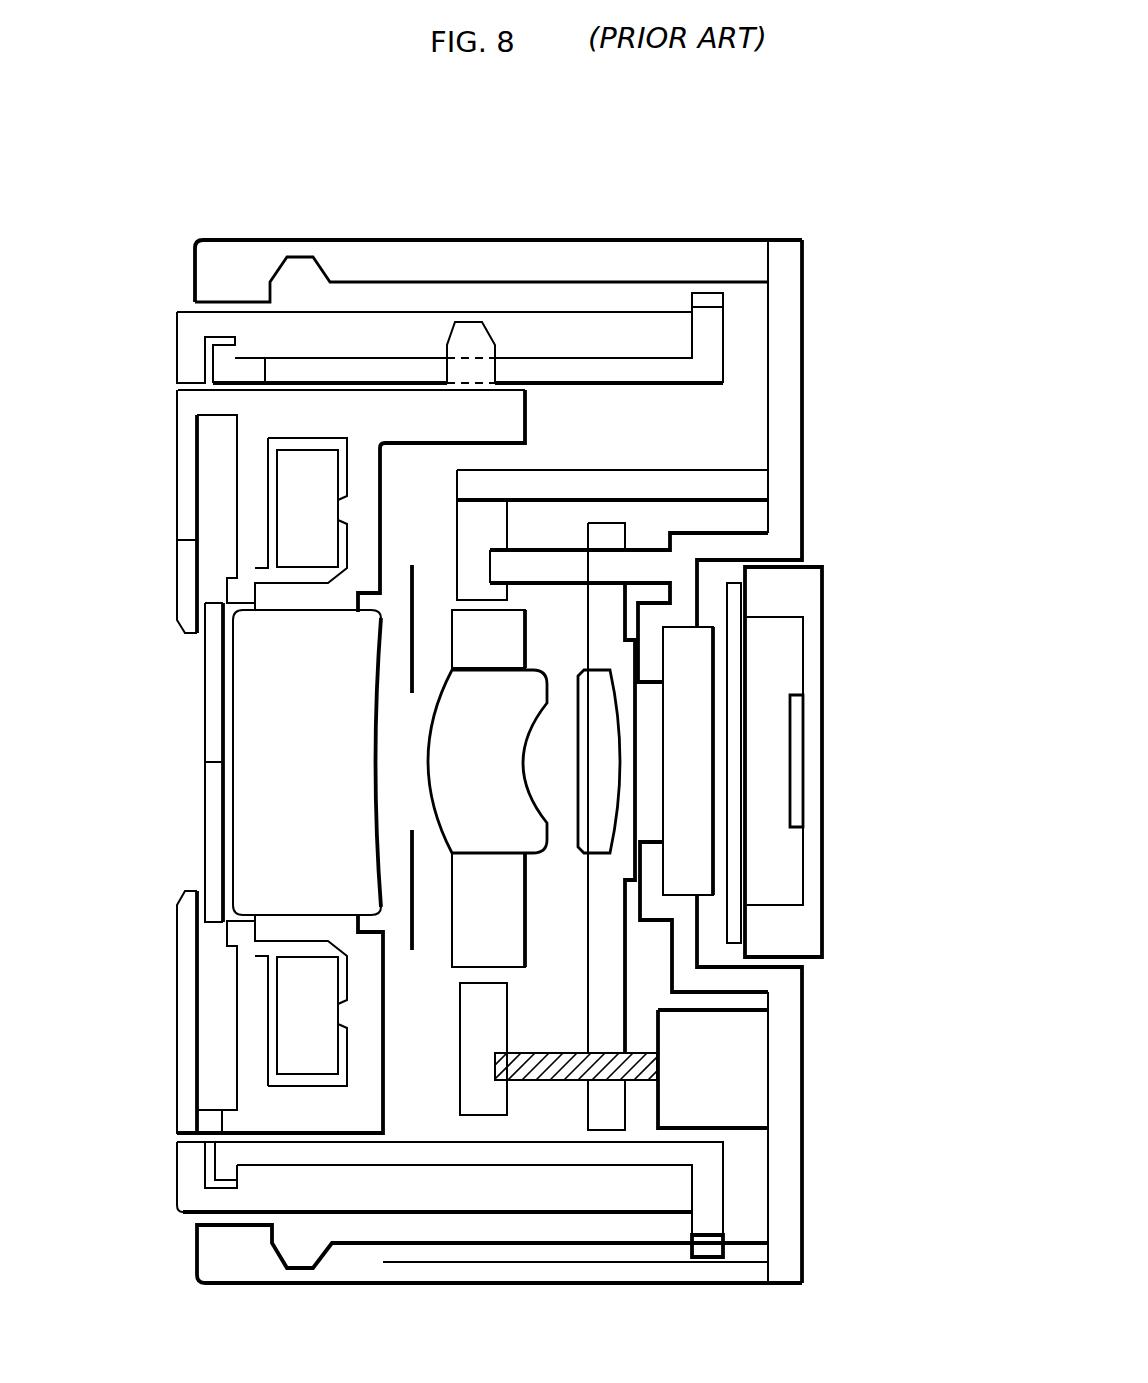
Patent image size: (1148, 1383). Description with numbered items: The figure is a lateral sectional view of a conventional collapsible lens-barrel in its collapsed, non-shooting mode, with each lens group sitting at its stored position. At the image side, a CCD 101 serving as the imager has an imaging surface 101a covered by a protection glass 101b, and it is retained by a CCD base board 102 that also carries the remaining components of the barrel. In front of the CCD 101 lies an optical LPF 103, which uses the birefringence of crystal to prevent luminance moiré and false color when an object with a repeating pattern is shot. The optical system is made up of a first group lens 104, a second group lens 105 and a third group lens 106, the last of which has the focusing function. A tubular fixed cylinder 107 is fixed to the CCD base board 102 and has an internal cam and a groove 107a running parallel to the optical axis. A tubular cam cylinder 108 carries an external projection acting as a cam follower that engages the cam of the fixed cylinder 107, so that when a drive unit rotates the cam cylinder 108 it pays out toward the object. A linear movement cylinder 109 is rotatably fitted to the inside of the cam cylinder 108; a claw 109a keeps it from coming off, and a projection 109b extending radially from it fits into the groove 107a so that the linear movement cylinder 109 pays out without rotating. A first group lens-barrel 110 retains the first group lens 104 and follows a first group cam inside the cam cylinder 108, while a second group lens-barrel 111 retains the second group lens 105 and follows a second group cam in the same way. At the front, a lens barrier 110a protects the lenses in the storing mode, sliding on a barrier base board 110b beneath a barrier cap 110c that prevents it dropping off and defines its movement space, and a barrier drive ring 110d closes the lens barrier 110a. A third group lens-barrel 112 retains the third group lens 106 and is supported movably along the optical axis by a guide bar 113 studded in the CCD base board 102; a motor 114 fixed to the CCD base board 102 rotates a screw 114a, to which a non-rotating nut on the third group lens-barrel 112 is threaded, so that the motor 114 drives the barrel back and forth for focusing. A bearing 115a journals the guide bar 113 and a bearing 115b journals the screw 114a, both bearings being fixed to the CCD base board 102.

The CCD 101 is at (822, 575).
The imaging surface 101a is at (788, 700).
The protection glass 101b is at (748, 850).
The CCD base board 102 is at (802, 258).
The optical LPF 103 is at (740, 932).
The first group lens 104 is at (205, 665).
The second group lens 105 is at (430, 800).
The third group lens 106 is at (620, 813).
The fixed cylinder 107 is at (633, 242).
The groove 107a is at (627, 1272).
The cam cylinder 108 is at (545, 310).
The linear movement cylinder 109 is at (723, 335).
The claw 109a is at (224, 345).
The projection 109b is at (712, 1252).
The first group lens-barrel 110 is at (452, 330).
The lens barrier 110a is at (207, 808).
The barrier base board 110b is at (177, 445).
The barrier cap 110c is at (177, 540).
The barrier drive ring 110d is at (309, 455).
The second group lens-barrel 111 is at (453, 943).
The third group lens-barrel 112 is at (617, 1033).
The guide bar 113 is at (640, 550).
The motor 114 is at (755, 1112).
The screw 114a is at (640, 1063).
The bearing 115a is at (730, 470).
The bearing 115b is at (493, 1100).